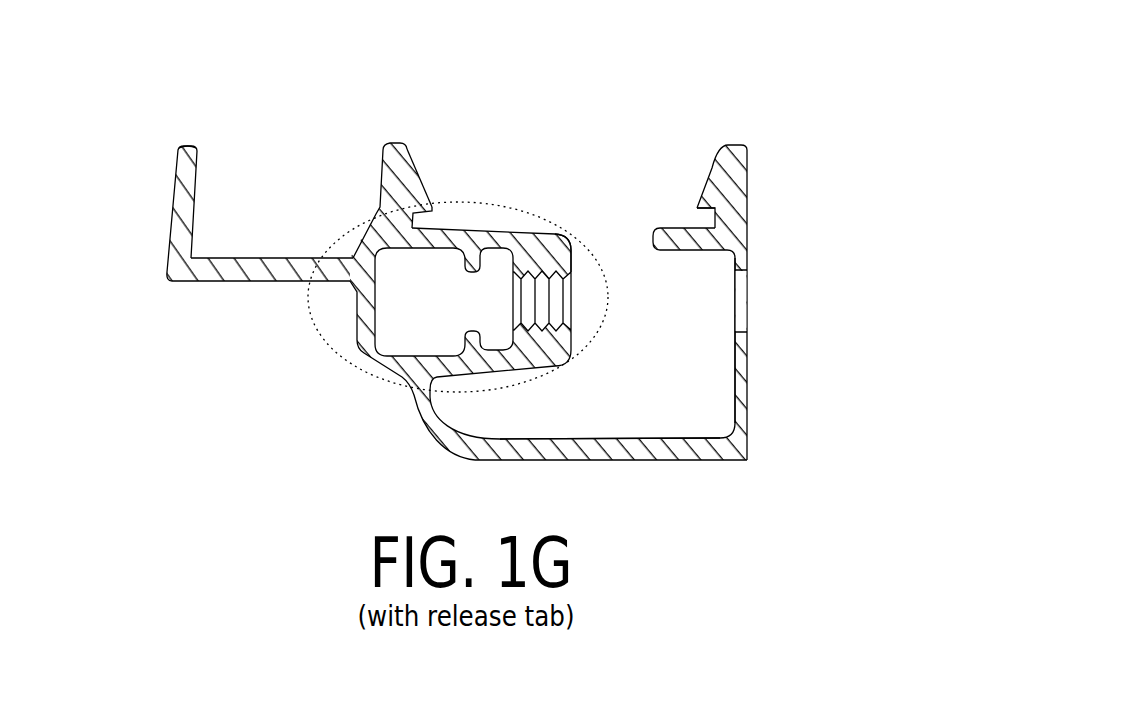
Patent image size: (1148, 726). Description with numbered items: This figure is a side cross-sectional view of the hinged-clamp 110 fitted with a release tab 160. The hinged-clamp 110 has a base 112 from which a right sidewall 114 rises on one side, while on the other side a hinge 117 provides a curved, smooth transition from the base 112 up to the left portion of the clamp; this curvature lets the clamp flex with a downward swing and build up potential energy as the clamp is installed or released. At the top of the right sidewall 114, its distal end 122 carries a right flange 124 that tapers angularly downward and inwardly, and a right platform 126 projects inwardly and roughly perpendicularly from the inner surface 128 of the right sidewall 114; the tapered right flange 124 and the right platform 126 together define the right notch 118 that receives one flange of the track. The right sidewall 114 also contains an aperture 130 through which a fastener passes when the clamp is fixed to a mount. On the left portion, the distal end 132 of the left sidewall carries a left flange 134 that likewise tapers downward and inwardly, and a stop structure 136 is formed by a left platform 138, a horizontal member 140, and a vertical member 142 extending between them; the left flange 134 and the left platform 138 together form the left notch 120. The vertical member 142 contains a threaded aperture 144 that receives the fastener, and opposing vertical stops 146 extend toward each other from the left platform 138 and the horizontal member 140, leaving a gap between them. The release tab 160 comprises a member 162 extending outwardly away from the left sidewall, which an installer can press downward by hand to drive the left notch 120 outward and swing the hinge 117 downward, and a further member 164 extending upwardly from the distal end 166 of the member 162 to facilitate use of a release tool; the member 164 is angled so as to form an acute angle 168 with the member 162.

The hinged-clamp 110 is at (858, 48).
The base 112 is at (700, 462).
The right sidewall 114 is at (746, 388).
The hinge 117 is at (433, 440).
The right notch 118 is at (688, 216).
The left notch 120 is at (438, 218).
The distal end of right sidewall 122 is at (737, 146).
The right flange 124 is at (711, 190).
The right platform 126 is at (650, 240).
The inner surface of right sidewall 128 is at (718, 382).
The aperture 130 is at (764, 300).
The distal end of left sidewall 132 is at (393, 142).
The left flange 134 is at (418, 173).
The stop structure 136 is at (307, 318).
The left platform 138 is at (517, 230).
The horizontal member 140 is at (540, 369).
The vertical member 142 is at (579, 244).
The threaded aperture 144 is at (520, 358).
The vertical stops 146 is at (497, 304).
The release tab 160 is at (200, 181).
The member 162 is at (245, 283).
The member 164 is at (174, 163).
The distal end 166 is at (188, 126).
The acute angle 168 is at (272, 253).